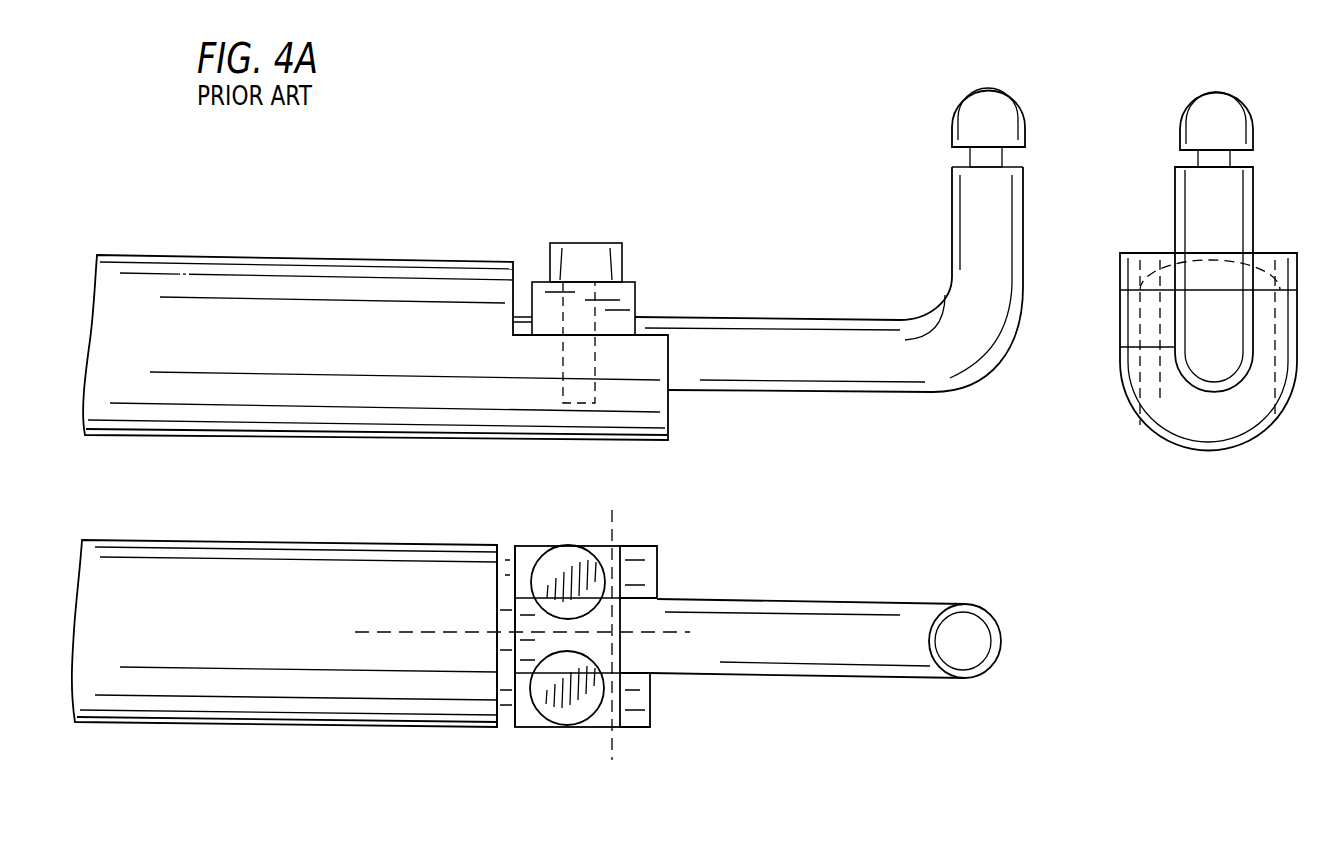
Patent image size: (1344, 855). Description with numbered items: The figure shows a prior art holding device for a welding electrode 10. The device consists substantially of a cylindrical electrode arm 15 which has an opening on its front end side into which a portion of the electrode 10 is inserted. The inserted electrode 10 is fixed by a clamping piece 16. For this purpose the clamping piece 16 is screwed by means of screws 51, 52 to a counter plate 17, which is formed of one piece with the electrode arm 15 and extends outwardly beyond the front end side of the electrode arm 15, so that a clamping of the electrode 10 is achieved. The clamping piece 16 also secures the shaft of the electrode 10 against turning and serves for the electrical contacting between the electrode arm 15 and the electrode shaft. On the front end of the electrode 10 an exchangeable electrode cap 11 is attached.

The welding electrode 10 is at (397, 382).
The electrode cap 11 is at (960, 128).
The electrode arm 15 is at (170, 353).
The clamping piece 16 is at (527, 558).
The counter plate 17 is at (630, 410).
The screw 51 is at (557, 578).
The screw 52 is at (558, 700).